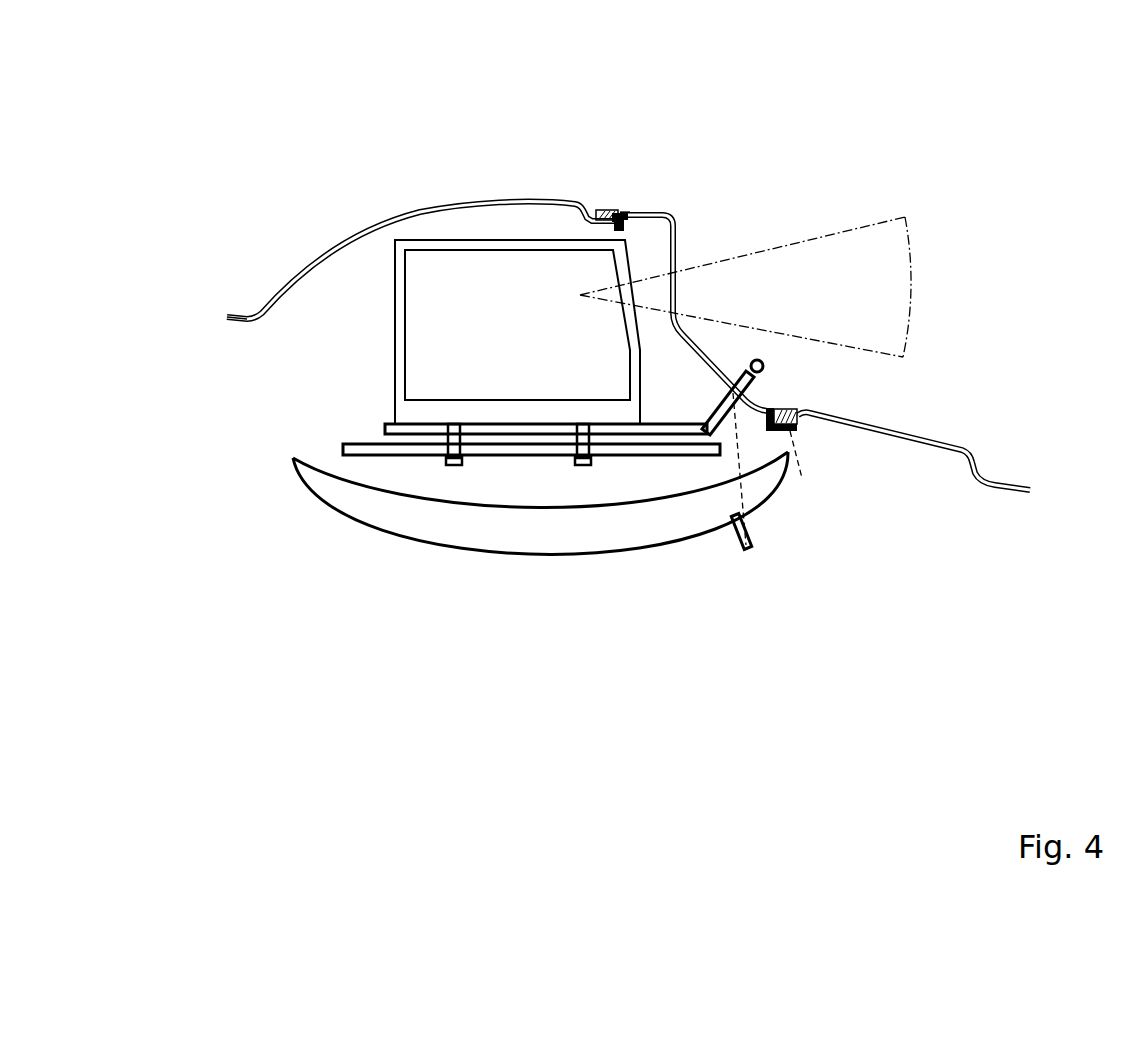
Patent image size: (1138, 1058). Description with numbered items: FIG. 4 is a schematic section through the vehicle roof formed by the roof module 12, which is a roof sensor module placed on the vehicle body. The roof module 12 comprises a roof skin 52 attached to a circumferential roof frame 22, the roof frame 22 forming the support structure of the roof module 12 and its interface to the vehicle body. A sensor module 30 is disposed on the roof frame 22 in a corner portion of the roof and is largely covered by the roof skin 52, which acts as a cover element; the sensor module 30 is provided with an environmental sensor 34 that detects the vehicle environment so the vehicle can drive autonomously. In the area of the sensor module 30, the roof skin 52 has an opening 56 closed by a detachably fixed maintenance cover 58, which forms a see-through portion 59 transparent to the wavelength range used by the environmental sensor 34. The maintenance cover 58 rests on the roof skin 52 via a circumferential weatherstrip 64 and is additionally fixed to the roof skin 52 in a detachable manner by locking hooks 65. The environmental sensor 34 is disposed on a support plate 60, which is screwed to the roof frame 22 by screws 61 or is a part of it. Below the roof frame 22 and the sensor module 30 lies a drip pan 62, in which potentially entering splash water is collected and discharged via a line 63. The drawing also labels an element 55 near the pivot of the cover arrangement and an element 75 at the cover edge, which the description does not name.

The roof module 12 is at (245, 310).
The roof skin 52 is at (308, 262).
The environmental sensor 34 is at (400, 245).
The sensor module 30 is at (390, 356).
The weatherstrip 64 is at (602, 212).
The locking hook 65 is at (622, 217).
The opening 56 is at (628, 218).
The maintenance cover 58 is at (668, 218).
The see-through portion 59 is at (703, 240).
The pivot arm 55 is at (763, 362).
The support plate 60 is at (418, 428).
The roof frame 22 is at (375, 450).
The screw 61 is at (453, 462).
The drip pan 62 is at (328, 497).
The line 63 is at (748, 548).
The seal 75 is at (780, 432).